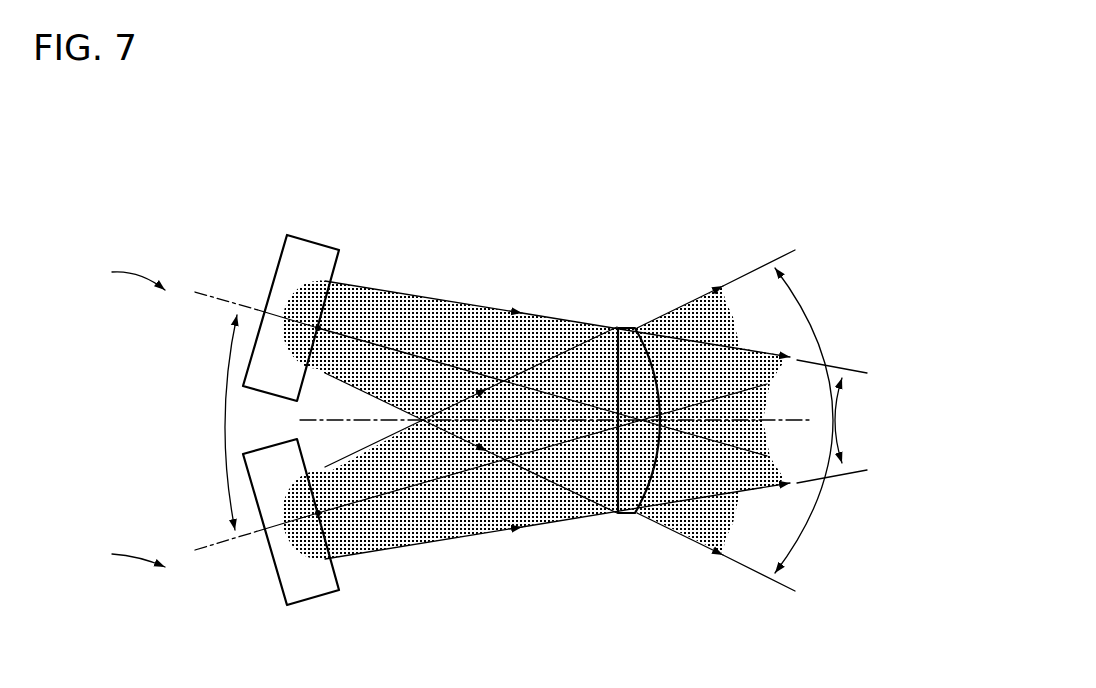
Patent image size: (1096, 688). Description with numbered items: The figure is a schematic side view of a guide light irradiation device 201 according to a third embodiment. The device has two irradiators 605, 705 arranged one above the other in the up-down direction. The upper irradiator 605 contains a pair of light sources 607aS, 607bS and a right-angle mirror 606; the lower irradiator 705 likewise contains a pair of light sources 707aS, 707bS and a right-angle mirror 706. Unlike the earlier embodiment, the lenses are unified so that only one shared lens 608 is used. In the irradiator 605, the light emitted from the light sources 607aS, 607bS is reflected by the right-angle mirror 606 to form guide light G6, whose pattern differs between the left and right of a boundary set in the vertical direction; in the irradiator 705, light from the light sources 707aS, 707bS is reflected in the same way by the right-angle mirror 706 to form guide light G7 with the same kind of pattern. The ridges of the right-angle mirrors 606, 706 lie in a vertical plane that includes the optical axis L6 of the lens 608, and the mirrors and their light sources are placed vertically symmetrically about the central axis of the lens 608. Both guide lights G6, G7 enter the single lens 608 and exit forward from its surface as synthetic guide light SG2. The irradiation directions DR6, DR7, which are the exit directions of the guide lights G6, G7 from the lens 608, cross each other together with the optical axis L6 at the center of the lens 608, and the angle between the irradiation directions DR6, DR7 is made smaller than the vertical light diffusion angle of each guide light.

The guide light irradiation device 201 is at (128, 134).
The irradiator 605 is at (109, 274).
The right-angle mirror 606 is at (281, 251).
The light source 607bS is at (318, 327).
The light source 607aS is at (393, 252).
The irradiation direction DR6 is at (243, 306).
The guide light G6 is at (462, 297).
The lens 608 is at (624, 327).
The synthetic guide light SG2 is at (708, 283).
The optical axis L6 is at (532, 424).
The irradiator 705 is at (109, 554).
The right-angle mirror 706 is at (282, 592).
The light source 707bS is at (318, 514).
The light source 707aS is at (380, 591).
The irradiation direction DR7 is at (252, 537).
The guide light G7 is at (493, 537).